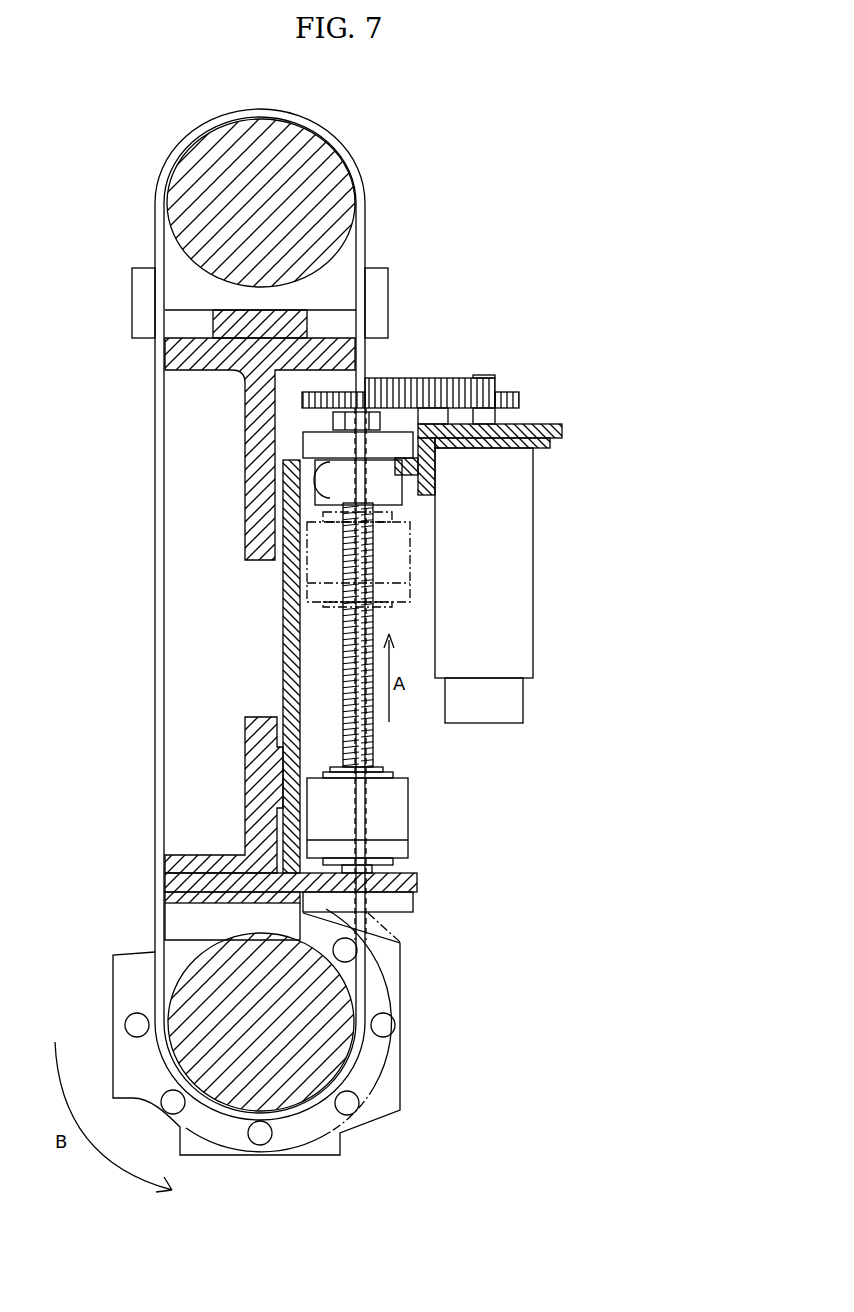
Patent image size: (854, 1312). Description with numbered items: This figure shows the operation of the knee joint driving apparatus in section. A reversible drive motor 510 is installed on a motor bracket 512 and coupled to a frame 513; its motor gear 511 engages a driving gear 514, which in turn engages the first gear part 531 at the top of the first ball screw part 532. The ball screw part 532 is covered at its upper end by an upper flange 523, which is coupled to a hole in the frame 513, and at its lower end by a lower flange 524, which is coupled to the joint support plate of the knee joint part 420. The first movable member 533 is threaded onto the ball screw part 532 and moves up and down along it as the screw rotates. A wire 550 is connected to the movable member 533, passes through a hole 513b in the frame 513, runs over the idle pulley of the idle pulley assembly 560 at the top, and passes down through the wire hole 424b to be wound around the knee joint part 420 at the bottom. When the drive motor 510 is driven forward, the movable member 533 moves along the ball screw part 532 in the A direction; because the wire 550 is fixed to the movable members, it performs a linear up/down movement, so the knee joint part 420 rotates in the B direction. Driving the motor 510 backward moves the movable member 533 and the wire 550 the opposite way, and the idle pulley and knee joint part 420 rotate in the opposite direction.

The wire 550 is at (333, 142).
The idle pulley assembly 560 is at (353, 188).
The first gear part 531 is at (303, 398).
The driving gear 514 is at (450, 378).
The motor gear 511 is at (510, 390).
The upper flange 523 is at (310, 445).
The motor bracket 512 is at (540, 422).
The drive motor 510 is at (530, 637).
The frame 513 is at (285, 668).
The hole 513b is at (316, 500).
The first ball screw part 532 is at (370, 741).
The first movable member 533 is at (403, 553).
The wire hole 424b is at (417, 882).
The lower flange 524 is at (413, 912).
The knee joint part 420 is at (400, 1152).